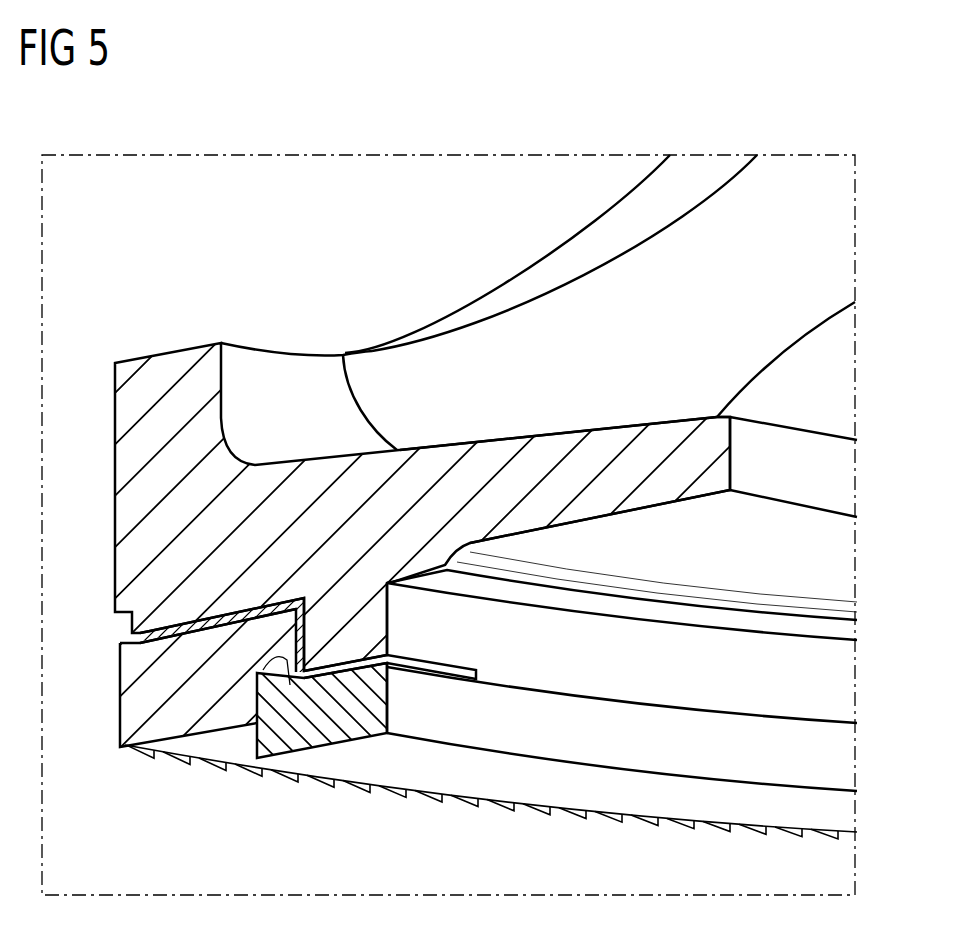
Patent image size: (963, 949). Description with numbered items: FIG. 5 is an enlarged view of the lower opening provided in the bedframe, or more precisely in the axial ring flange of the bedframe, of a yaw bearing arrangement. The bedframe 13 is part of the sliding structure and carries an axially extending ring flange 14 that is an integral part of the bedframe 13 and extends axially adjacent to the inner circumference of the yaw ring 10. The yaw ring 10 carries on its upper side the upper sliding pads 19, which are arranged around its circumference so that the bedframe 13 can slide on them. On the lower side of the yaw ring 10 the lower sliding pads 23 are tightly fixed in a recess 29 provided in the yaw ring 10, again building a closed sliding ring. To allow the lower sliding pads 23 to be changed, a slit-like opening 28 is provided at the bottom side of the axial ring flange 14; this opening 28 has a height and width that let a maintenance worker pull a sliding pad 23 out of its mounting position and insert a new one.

The yaw ring 10 is at (132, 712).
The bedframe 13 is at (612, 445).
The axial ring flange 14 is at (835, 673).
The upper sliding pads 19 is at (190, 628).
The lower sliding pads 23 is at (282, 676).
The slit-like opening 28 is at (438, 668).
The recess 29 is at (263, 670).